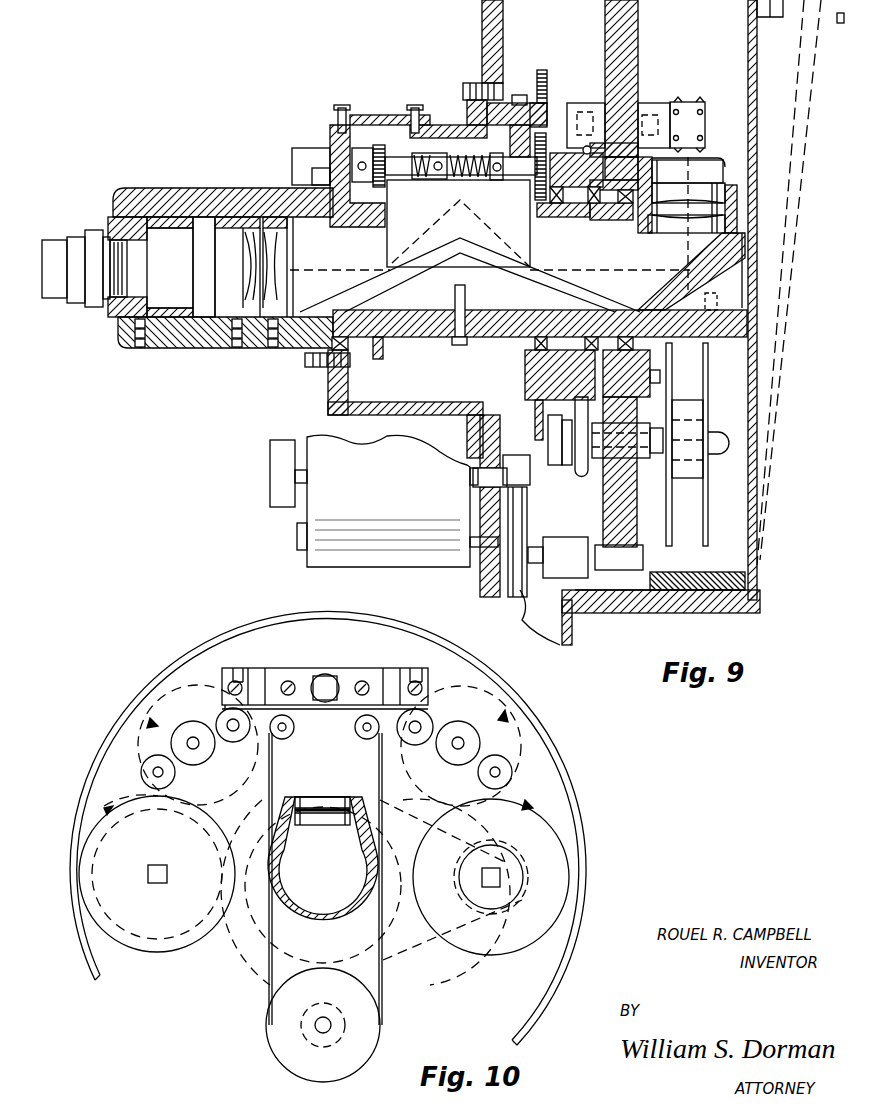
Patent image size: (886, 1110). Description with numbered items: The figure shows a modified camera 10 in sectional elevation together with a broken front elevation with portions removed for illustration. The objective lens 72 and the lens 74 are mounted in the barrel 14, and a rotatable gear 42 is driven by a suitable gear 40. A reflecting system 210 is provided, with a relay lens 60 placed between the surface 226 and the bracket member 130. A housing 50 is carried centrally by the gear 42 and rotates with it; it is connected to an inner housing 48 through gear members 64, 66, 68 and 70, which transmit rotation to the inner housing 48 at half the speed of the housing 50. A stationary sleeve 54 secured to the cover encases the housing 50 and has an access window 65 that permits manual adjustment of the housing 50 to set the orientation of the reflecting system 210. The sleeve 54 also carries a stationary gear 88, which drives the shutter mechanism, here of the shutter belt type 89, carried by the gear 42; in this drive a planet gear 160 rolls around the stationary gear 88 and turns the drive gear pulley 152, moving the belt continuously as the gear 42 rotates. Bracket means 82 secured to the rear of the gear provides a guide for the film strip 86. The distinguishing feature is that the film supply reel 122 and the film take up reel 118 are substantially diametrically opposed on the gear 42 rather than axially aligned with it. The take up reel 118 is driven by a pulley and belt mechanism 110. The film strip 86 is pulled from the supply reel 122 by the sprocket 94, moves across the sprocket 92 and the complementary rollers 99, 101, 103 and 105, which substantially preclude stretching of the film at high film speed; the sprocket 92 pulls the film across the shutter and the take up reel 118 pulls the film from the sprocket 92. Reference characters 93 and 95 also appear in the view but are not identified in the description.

In FIG. 9, the camera 10 is at (268, 483).
In FIG. 9, the barrel 14 is at (190, 350).
In FIG. 9, the gear 40 is at (622, 572).
In FIG. 9, the rotatable gear 42 is at (632, 52).
In FIG. 10, the rotatable gear 42 is at (515, 1002).
In FIG. 9, the inner housing 48 is at (332, 228).
In FIG. 9, the housing 50 is at (588, 214).
In FIG. 9, the stationary sleeve 54 is at (330, 392).
In FIG. 9, the relay lens 60 is at (718, 190).
In FIG. 10, the relay lens 60 is at (312, 808).
In FIG. 9, the gear member 64 is at (377, 145).
In FIG. 9, the access window 65 is at (398, 118).
In FIG. 9, the gear member 66 is at (548, 168).
In FIG. 9, the gear member 68 is at (540, 206).
In FIG. 9, the gear member 70 is at (385, 200).
In FIG. 9, the objective lens 72 is at (160, 236).
In FIG. 9, the lens 74 is at (228, 240).
In FIG. 10, the bracket means 82 is at (385, 680).
In FIG. 10, the film strip 86 is at (152, 795).
In FIG. 9, the stationary gear 88 is at (492, 421).
In FIG. 10, the stationary gear 88 is at (242, 966).
In FIG. 10, the shutter belt 89 is at (360, 942).
In FIG. 10, the sprocket 92 is at (459, 740).
In FIG. 9, the gear 93 is at (541, 70).
In FIG. 10, the gear 93 is at (490, 710).
In FIG. 10, the sprocket 94 is at (193, 740).
In FIG. 10, the pitch circle 95 is at (170, 702).
In FIG. 10, the roller 99 is at (157, 768).
In FIG. 10, the roller 101 is at (233, 722).
In FIG. 10, the roller 103 is at (416, 724).
In FIG. 10, the roller 105 is at (496, 770).
In FIG. 9, the pulley and belt mechanism 110 is at (580, 466).
In FIG. 10, the pulley and belt mechanism 110 is at (420, 945).
In FIG. 9, the film take up reel 118 is at (712, 512).
In FIG. 10, the film take up reel 118 is at (545, 855).
In FIG. 10, the film supply reel 122 is at (178, 945).
In FIG. 9, the bracket member 130 is at (706, 158).
In FIG. 10, the drive gear pulley 152 is at (365, 1025).
In FIG. 10, the planet gear 160 is at (312, 1025).
In FIG. 9, the reflecting system 210 is at (530, 276).
In FIG. 9, the surface 226 is at (705, 262).